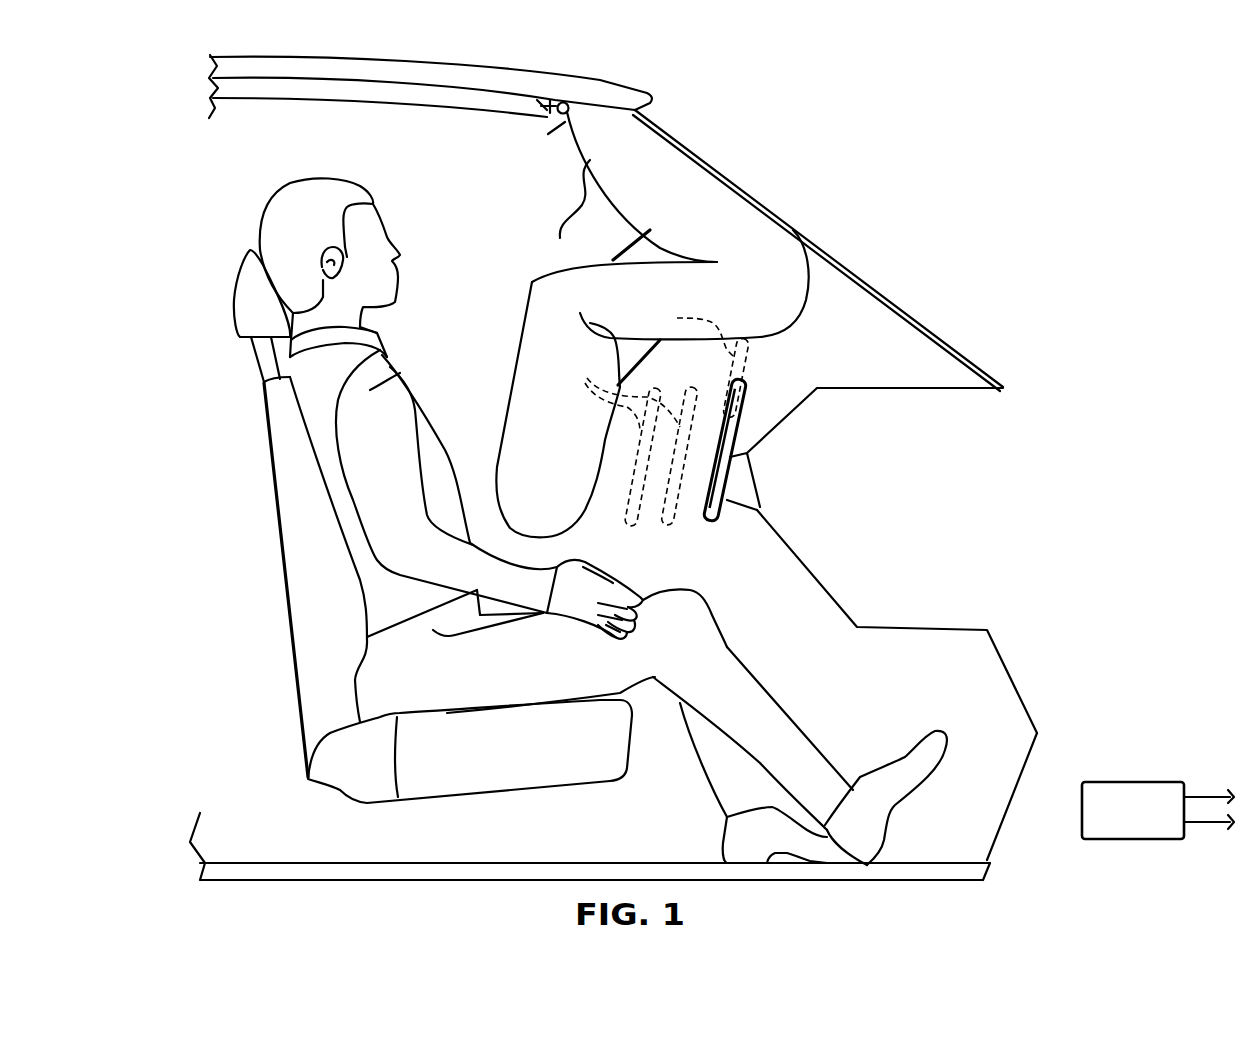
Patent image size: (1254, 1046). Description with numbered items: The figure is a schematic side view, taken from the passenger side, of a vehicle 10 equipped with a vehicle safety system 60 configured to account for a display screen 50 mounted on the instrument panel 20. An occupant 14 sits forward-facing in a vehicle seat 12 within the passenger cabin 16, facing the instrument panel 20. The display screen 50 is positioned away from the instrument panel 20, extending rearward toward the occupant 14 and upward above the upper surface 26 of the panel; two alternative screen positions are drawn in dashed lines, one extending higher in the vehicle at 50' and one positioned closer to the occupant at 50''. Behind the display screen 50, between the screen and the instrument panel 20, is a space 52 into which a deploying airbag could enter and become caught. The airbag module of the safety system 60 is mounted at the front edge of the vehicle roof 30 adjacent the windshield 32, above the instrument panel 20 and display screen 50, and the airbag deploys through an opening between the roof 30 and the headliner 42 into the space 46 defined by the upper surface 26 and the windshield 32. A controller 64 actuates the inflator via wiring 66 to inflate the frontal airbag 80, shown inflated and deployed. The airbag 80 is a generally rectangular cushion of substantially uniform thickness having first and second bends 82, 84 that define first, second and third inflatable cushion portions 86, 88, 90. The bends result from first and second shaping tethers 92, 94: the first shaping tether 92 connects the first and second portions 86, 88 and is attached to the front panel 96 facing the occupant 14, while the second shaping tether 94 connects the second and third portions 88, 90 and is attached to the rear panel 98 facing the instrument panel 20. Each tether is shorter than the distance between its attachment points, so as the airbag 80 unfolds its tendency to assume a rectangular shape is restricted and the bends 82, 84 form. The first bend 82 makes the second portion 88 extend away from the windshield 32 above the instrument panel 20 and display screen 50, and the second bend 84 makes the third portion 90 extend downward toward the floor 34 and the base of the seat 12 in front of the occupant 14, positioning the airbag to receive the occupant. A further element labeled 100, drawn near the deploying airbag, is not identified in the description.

The vehicle 10 is at (676, 268).
The vehicle seat 12 is at (313, 590).
The occupant 14 is at (370, 390).
The passenger cabin 16 is at (613, 464).
The instrument panel 20 is at (825, 517).
The upper surface 26 is at (877, 388).
The vehicle roof 30 is at (454, 89).
The windshield 32 is at (893, 304).
The floor 34 is at (417, 868).
The headliner 42 is at (443, 108).
The space 46 is at (826, 295).
The display screen 50 is at (712, 410).
The display screen 50' is at (689, 327).
The display screen 50'' is at (623, 393).
The space 52 is at (772, 402).
The vehicle safety system 60 is at (577, 62).
The controller 64 is at (876, 434).
The wiring 66 is at (1218, 822).
The frontal airbag 80 is at (659, 324).
The first bend 82 is at (757, 253).
The second bend 84 is at (567, 290).
The first cushion portion 86 is at (643, 168).
The second cushion portion 88 is at (763, 337).
The third cushion portion 90 is at (536, 409).
The first shaping tether 92 is at (635, 230).
The second shaping tether 94 is at (636, 372).
The front panel 96 is at (520, 338).
The rear panel 98 is at (600, 457).
The wiring 100 is at (573, 197).